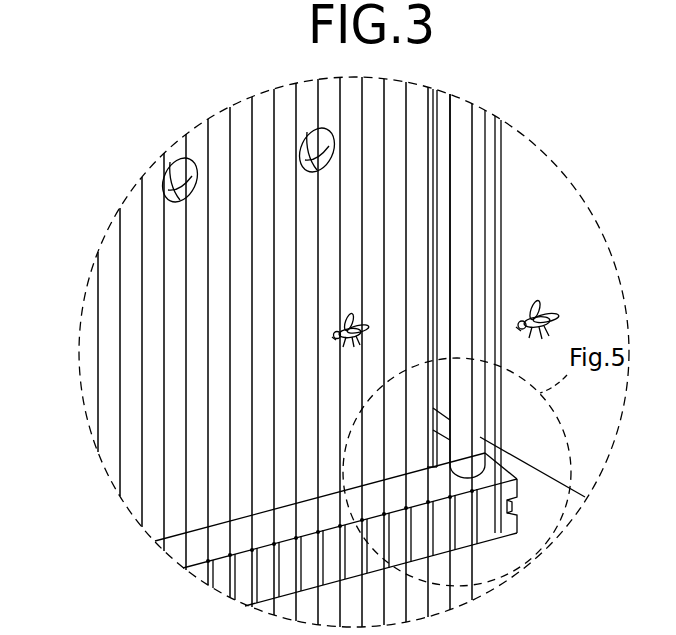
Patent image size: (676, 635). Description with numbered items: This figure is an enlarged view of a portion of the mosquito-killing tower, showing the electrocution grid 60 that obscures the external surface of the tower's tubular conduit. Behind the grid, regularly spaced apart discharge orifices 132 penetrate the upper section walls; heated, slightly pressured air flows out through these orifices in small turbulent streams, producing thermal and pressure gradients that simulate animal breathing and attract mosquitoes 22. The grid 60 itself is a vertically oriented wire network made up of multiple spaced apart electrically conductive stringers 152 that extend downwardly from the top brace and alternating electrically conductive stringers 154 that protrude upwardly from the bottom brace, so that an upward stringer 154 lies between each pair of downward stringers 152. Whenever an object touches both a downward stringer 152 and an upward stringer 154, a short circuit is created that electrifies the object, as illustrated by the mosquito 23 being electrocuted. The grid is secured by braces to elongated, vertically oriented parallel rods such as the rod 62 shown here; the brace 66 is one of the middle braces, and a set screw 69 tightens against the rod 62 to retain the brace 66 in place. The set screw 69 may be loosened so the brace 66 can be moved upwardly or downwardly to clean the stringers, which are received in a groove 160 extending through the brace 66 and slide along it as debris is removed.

The electrocution grid 60 is at (98, 452).
The discharge orifices 132 is at (300, 147).
The stringers 152 is at (471, 167).
The stringers 154 is at (497, 205).
The mosquito 23 is at (350, 310).
The mosquitoes 22 is at (558, 311).
The rod 62 is at (480, 445).
The brace 66 is at (518, 487).
The set screw 69 is at (508, 503).
The groove 160 is at (478, 516).